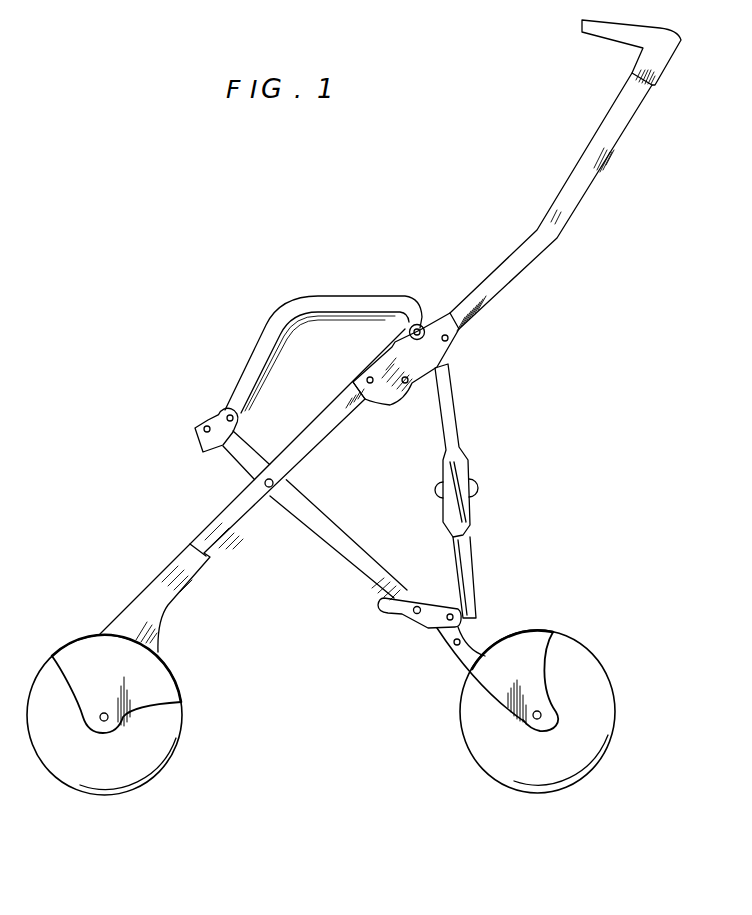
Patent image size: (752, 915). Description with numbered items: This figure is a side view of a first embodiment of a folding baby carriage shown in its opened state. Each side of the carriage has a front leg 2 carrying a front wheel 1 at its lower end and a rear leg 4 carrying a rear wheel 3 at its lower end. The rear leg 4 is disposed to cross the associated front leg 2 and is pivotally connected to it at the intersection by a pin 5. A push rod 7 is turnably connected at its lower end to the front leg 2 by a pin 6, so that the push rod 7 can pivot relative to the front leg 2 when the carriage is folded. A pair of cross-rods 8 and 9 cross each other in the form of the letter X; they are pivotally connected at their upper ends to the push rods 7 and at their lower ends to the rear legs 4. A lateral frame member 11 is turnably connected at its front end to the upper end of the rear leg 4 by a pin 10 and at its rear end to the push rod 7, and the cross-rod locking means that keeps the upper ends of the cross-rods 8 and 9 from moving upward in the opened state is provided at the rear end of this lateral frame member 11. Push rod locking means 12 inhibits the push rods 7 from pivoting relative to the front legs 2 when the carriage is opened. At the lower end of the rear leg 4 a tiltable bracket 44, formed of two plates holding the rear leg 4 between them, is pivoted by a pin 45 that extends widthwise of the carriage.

The front wheel 1 is at (162, 740).
The front leg 2 is at (215, 543).
The rear wheel 3 is at (587, 677).
The rear leg 4 is at (352, 560).
The pin 5 is at (270, 493).
The pin 6 is at (414, 322).
The push rod 7 is at (563, 228).
The cross-rod 8 is at (452, 435).
The cross-rod 9 is at (470, 568).
The pin 10 is at (216, 413).
The lateral frame member 11 is at (325, 306).
The push rod locking means 12 is at (340, 352).
The tiltable bracket 44 is at (388, 617).
The pin 45 is at (417, 606).